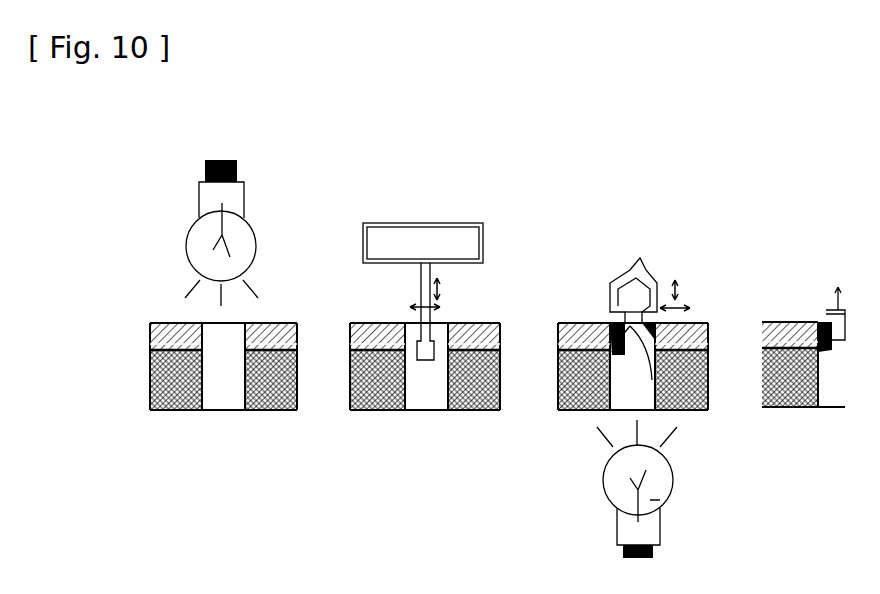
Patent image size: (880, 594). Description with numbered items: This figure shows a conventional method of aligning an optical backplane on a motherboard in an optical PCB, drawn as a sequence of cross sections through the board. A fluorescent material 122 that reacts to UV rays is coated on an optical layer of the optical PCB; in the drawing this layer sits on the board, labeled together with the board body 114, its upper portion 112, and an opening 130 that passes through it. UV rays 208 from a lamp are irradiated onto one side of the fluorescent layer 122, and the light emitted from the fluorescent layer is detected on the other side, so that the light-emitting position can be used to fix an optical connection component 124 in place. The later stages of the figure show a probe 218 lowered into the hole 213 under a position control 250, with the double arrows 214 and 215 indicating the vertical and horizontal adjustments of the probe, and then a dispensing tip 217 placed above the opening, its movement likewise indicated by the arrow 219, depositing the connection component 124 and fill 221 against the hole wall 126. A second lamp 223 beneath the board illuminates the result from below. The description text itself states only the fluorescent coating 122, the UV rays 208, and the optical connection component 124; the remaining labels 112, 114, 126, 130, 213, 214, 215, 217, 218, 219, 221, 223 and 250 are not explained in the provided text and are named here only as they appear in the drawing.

The substrate upper layer 112 is at (288, 323).
The substrate 114 is at (177, 411).
The fluorescent material 122 is at (168, 323).
The optical connection component 124 is at (612, 323).
The hole wall 126 is at (690, 384).
The through hole 130 is at (238, 345).
The UV rays 208 is at (247, 240).
The hole 213 is at (405, 322).
The vertical movement 214 is at (440, 286).
The horizontal movement 215 is at (440, 307).
The dispenser nozzle 217 is at (620, 275).
The probe 218 is at (425, 360).
The horizontal movement of nozzle 219 is at (690, 308).
The fill material 221 is at (610, 380).
The light source 223 is at (660, 500).
The position control 250 is at (453, 223).